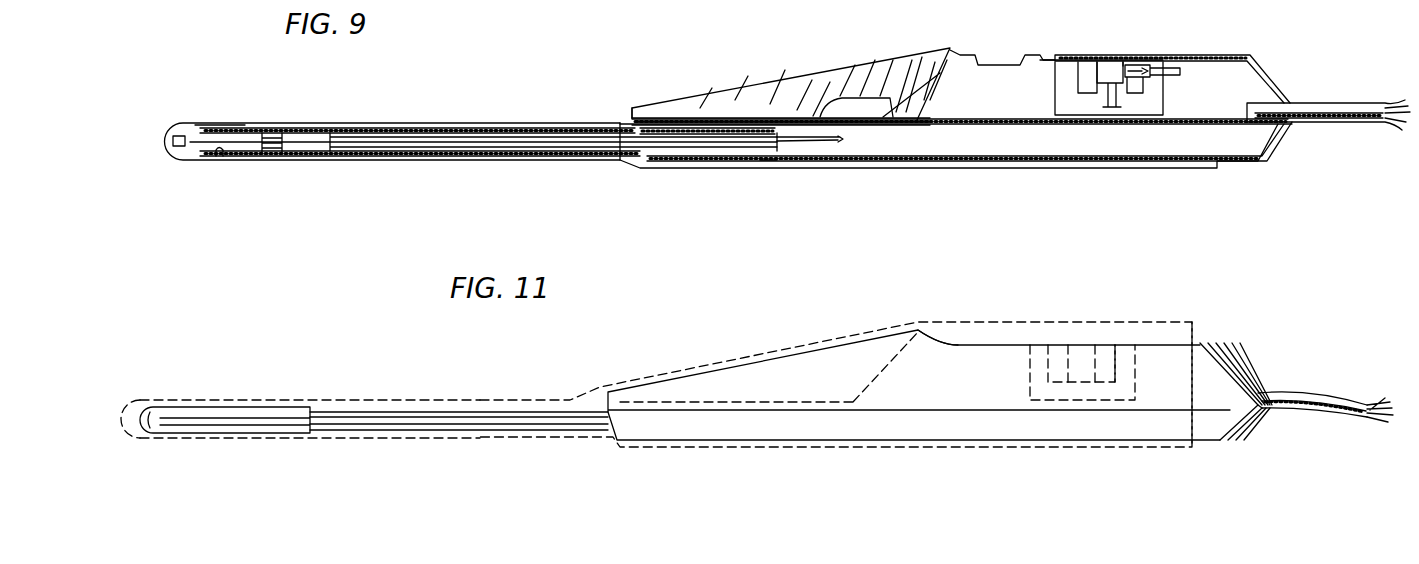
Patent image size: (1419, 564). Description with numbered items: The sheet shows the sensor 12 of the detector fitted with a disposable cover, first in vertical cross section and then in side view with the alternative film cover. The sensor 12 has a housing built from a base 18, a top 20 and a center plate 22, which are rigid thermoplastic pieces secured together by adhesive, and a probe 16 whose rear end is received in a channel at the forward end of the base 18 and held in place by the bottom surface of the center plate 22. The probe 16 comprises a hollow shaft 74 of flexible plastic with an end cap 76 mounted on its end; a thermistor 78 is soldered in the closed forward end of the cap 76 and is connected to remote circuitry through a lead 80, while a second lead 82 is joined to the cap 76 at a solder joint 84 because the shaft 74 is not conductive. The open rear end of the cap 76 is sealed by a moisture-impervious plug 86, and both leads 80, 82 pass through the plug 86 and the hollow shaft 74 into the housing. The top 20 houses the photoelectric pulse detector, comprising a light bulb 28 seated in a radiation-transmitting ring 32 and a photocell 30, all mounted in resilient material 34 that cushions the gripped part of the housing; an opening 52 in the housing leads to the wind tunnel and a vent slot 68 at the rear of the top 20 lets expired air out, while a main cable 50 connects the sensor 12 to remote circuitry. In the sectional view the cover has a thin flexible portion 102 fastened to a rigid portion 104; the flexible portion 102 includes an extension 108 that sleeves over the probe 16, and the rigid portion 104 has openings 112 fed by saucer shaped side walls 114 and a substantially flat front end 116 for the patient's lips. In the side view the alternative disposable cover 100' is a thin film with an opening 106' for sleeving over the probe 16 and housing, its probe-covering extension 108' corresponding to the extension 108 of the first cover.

In FIG. 11, the sensor 12 is at (715, 333).
In FIG. 9, the probe 16 is at (373, 112).
In FIG. 11, the probe 16 is at (352, 390).
In FIG. 9, the base 18 is at (1236, 155).
In FIG. 9, the top 20 is at (1237, 58).
In FIG. 11, the top 20 is at (950, 344).
In FIG. 9, the center plate 22 is at (1122, 126).
In FIG. 9, the light bulb 28 is at (1147, 58).
In FIG. 9, the photocell 30 is at (1110, 64).
In FIG. 11, the photocell 30 is at (1078, 346).
In FIG. 9, the radiation-transmitting ring 32 is at (1157, 86).
In FIG. 11, the radiation-transmitting ring 32 is at (1108, 346).
In FIG. 9, the resilient material 34 is at (1072, 60).
In FIG. 11, the resilient material 34 is at (1039, 346).
In FIG. 9, the main cable 50 is at (1313, 103).
In FIG. 11, the main cable 50 is at (1290, 394).
In FIG. 9, the opening 52 is at (944, 79).
In FIG. 11, the vent slot 68 is at (1264, 410).
In FIG. 9, the hollow shaft 74 is at (549, 125).
In FIG. 11, the hollow shaft 74 is at (457, 410).
In FIG. 9, the end cap 76 is at (229, 123).
In FIG. 11, the end cap 76 is at (184, 406).
In FIG. 9, the thermistor 78 is at (168, 141).
In FIG. 9, the lead 80 is at (840, 141).
In FIG. 9, the second lead 82 is at (768, 148).
In FIG. 9, the solder joint 84 is at (217, 158).
In FIG. 9, the plug 86 is at (270, 154).
In FIG. 11, the disposable cover 100' is at (940, 404).
In FIG. 9, the flexible portion 102 is at (952, 165).
In FIG. 9, the rigid portion 104 is at (855, 70).
In FIG. 11, the opening 106' is at (1224, 364).
In FIG. 9, the extension 108 is at (420, 113).
In FIG. 11, the outer sheath 108' is at (471, 455).
In FIG. 9, the openings 112 is at (880, 90).
In FIG. 9, the saucer shaped side walls 114 is at (764, 98).
In FIG. 9, the front end 116 is at (665, 115).